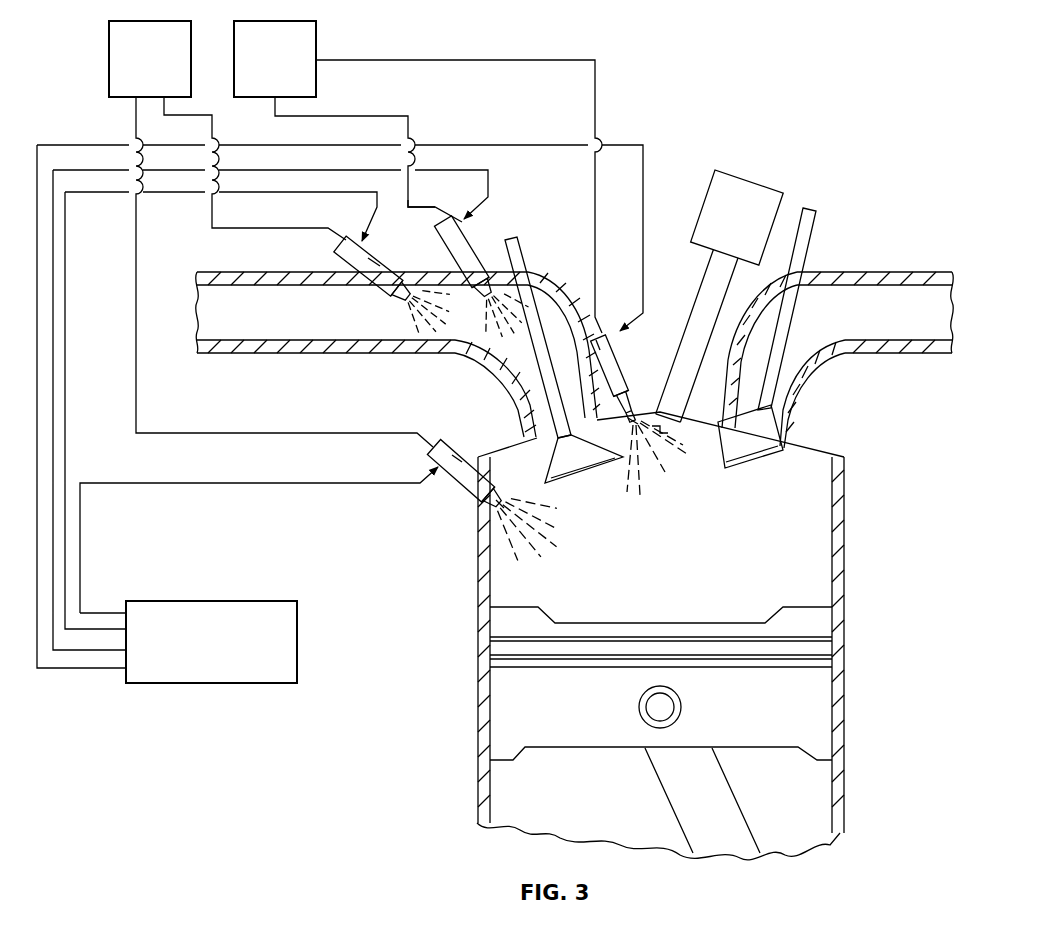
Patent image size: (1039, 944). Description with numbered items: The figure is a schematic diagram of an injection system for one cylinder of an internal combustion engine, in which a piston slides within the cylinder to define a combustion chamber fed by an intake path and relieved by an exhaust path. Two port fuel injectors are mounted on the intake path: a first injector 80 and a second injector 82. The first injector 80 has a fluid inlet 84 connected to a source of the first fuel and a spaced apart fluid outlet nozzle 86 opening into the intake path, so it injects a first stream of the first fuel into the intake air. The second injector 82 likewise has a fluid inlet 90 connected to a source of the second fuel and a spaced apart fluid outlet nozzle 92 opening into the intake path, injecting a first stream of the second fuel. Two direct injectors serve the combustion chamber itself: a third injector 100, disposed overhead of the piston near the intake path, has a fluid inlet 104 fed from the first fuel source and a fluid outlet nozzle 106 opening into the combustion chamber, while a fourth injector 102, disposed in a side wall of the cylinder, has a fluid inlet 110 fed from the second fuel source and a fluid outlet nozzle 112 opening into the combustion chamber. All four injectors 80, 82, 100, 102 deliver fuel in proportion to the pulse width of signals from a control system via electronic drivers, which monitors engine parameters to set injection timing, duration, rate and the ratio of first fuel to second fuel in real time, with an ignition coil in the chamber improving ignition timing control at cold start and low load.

The first injector 80 is at (467, 246).
The second injector 82 is at (370, 262).
The fluid inlet 84 is at (425, 213).
The fluid outlet nozzle 86 is at (520, 290).
The fluid inlet 90 is at (340, 240).
The fluid outlet nozzle 92 is at (412, 306).
The third injector 100 is at (618, 334).
The fourth injector 102 is at (455, 458).
The fluid inlet 104 is at (601, 338).
The fluid outlet nozzle 106 is at (632, 418).
The fluid inlet 110 is at (433, 447).
The fluid outlet nozzle 112 is at (510, 496).